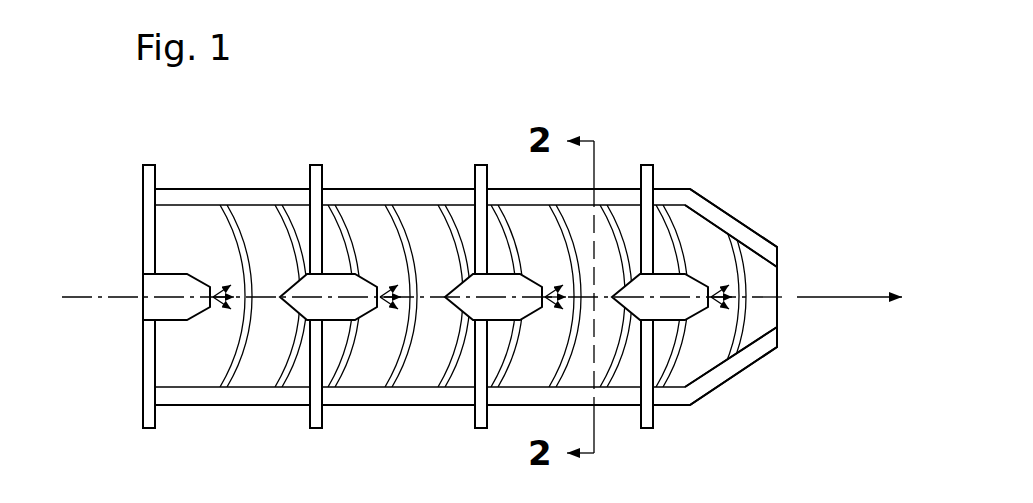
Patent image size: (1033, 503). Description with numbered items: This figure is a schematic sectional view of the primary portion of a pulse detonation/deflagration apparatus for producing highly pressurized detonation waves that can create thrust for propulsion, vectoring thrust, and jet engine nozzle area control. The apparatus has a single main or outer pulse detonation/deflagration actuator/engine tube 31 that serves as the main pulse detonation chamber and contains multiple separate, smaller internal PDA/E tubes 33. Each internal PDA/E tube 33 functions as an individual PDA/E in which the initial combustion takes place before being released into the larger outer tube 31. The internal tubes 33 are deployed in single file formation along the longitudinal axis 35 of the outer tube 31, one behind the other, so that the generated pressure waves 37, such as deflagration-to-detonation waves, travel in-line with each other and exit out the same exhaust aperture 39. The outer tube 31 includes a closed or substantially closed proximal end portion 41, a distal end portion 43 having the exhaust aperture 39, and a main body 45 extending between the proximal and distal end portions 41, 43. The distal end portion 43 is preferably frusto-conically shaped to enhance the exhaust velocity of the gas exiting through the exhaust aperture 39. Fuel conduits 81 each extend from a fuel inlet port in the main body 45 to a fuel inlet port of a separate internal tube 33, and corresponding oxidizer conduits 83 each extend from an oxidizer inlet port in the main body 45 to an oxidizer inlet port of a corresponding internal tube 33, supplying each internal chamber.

The main/outer pulse detonation/deflagration actuator/engine tube 31 is at (513, 52).
The internal PDA/E tubes 33 is at (198, 276).
The longitudinal axis 35 is at (108, 297).
The pressure waves 37 is at (731, 343).
The exhaust aperture 39 is at (783, 267).
The proximal end portion 41 is at (128, 203).
The distal end portion 43 is at (842, 182).
The main body 45 is at (413, 122).
The fuel conduits 81 is at (315, 430).
The oxidizer conduits 83 is at (315, 165).